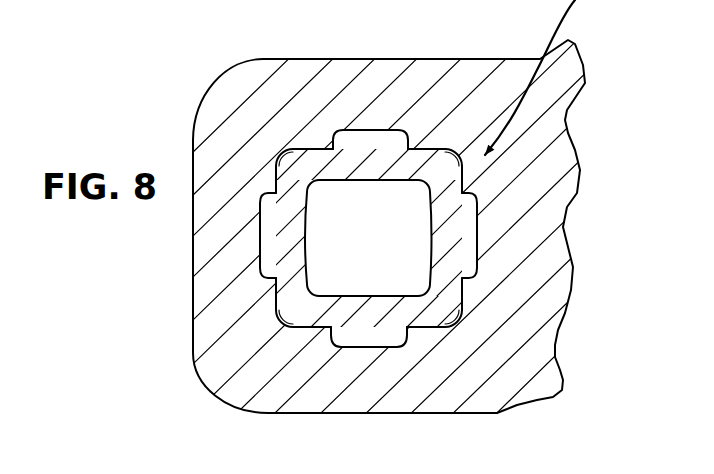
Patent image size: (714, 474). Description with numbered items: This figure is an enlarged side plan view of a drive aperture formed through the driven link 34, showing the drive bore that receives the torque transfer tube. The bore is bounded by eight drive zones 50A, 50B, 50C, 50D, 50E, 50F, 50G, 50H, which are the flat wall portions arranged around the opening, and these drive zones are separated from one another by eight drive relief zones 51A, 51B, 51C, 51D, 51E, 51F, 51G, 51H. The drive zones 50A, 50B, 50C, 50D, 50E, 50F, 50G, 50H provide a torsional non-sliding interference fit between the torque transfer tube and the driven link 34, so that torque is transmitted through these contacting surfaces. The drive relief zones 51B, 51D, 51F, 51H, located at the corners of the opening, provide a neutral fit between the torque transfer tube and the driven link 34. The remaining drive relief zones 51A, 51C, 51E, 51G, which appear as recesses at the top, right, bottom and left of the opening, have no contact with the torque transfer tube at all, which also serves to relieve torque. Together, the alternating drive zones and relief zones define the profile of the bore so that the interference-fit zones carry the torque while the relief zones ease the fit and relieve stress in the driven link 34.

The driven link 34 is at (550, 78).
The drive zone 50A is at (428, 149).
The drive zone 50B is at (463, 188).
The drive zone 50C is at (462, 297).
The drive zone 50D is at (428, 327).
The drive zone 50E is at (307, 327).
The drive zone 50F is at (276, 292).
The drive zone 50G is at (276, 193).
The drive zone 50H is at (308, 150).
The drive relief zone 51A is at (363, 123).
The drive relief zone 51B is at (465, 149).
The drive relief zone 51C is at (483, 233).
The drive relief zone 51D is at (462, 333).
The drive relief zone 51E is at (363, 350).
The drive relief zone 51F is at (272, 328).
The drive relief zone 51G is at (252, 236).
The drive relief zone 51H is at (267, 152).